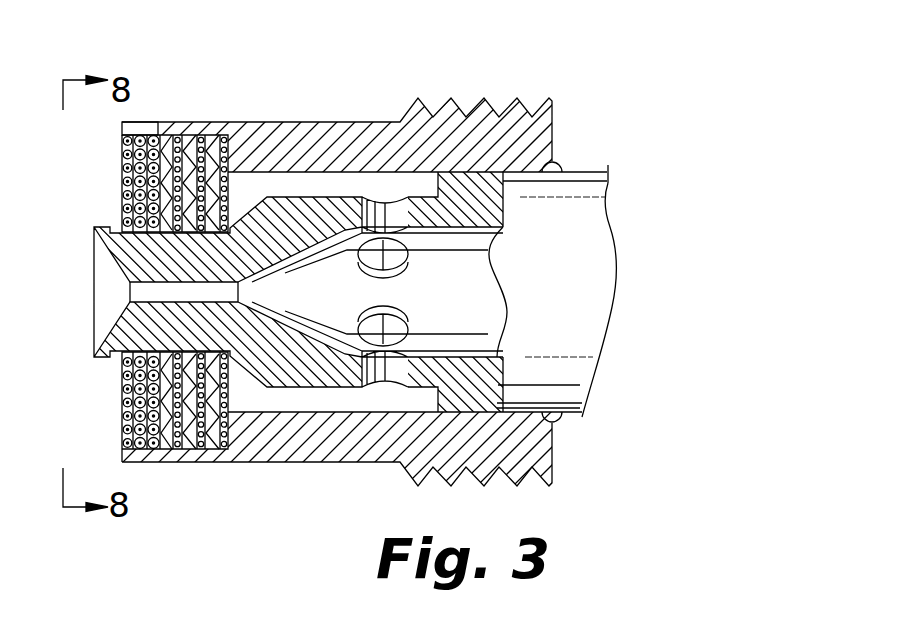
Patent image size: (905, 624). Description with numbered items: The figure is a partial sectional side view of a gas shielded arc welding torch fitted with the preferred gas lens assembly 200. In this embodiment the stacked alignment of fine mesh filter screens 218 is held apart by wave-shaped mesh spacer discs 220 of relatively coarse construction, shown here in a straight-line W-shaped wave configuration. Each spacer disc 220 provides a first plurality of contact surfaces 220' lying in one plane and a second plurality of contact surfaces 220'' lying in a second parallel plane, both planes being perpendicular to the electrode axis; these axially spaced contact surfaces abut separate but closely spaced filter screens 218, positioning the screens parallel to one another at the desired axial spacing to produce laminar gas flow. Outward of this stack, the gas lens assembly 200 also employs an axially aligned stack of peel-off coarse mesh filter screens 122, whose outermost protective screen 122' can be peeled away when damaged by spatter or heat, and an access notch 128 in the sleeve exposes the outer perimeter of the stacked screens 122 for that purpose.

The gas lens assembly 200 is at (249, 184).
The notch 128 is at (137, 128).
The coarse mesh filter screens 122 is at (129, 183).
The outermost protective screen 122' is at (131, 407).
The wave-shaped mesh spacer discs 220 is at (135, 254).
The first plurality of contact surfaces 220' is at (88, 349).
The second plurality of contact surfaces 220'' is at (245, 431).
The fine mesh filter screens 218 is at (229, 171).